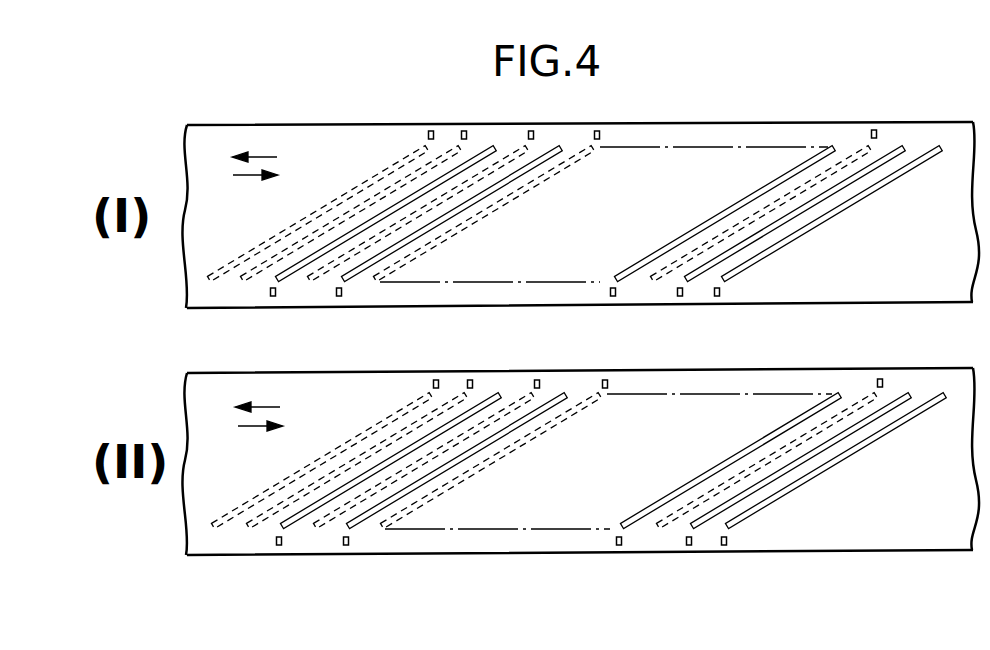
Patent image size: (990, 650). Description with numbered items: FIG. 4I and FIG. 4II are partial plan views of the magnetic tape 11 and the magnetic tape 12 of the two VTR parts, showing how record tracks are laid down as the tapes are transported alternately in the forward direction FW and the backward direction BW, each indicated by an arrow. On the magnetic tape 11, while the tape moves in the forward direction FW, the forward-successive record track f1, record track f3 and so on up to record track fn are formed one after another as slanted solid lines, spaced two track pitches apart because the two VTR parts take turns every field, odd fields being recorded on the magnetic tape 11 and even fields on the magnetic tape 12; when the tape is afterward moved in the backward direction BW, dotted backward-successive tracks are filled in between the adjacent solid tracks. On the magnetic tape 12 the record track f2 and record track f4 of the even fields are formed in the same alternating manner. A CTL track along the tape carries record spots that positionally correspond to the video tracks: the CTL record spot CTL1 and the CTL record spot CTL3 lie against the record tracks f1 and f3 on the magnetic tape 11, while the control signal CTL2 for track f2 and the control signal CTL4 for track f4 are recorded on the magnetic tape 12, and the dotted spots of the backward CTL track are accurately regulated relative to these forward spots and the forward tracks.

In FIG. 4I, the magnetic tape 11 is at (503, 306).
In FIG. 4II, the magnetic tape 12 is at (507, 553).
In FIG. 4I, the record track f1 is at (290, 277).
In FIG. 4II, the record track f2 is at (295, 524).
In FIG. 4I, the record track f3 is at (362, 276).
In FIG. 4II, the record track f4 is at (367, 523).
In FIG. 4I, the record track fn is at (727, 279).
In FIG. 4I, the CTL record spot CTL1 is at (268, 296).
In FIG. 4II, the control signal for track f2 CTL2 is at (275, 544).
In FIG. 4I, the CTL record spot CTL3 is at (343, 296).
In FIG. 4II, the control signal for track f4 CTL4 is at (350, 546).
In FIG. 4I, the forward direction FW is at (262, 154).
In FIG. 4II, the forward direction FW is at (262, 403).
In FIG. 4I, the backward direction BW is at (247, 177).
In FIG. 4II, the backward direction BW is at (248, 428).